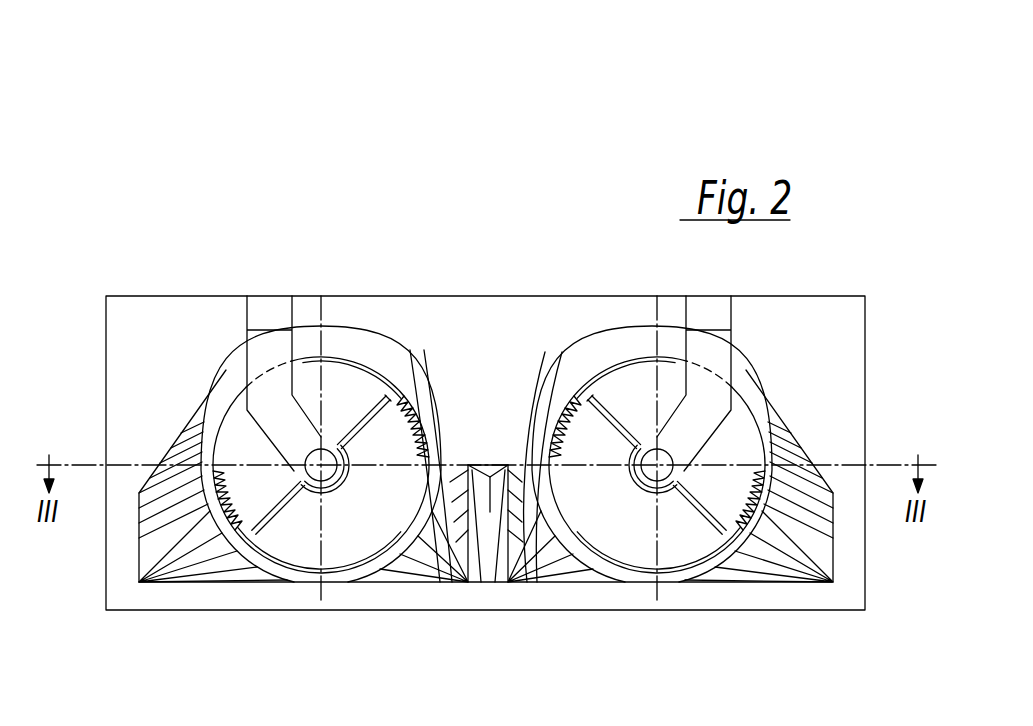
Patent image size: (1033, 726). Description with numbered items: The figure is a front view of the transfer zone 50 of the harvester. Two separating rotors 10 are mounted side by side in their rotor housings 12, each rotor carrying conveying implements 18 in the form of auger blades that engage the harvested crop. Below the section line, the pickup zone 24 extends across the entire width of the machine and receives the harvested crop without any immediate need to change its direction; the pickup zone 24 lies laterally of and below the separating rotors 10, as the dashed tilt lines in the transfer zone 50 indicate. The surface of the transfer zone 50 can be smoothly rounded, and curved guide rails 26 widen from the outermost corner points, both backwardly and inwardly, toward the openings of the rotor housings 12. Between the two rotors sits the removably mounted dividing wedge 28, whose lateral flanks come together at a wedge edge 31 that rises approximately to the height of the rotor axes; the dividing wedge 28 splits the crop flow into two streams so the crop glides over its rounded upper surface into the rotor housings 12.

The transfer zone 50 is at (487, 198).
The separating rotor 10 is at (342, 392).
The rotor housing 12 is at (227, 370).
The conveying implements 18 is at (583, 453).
The pickup zone 24 is at (191, 553).
The guide rails 26 is at (508, 583).
The dividing wedge 28 is at (493, 556).
The wedge edge 31 is at (486, 464).